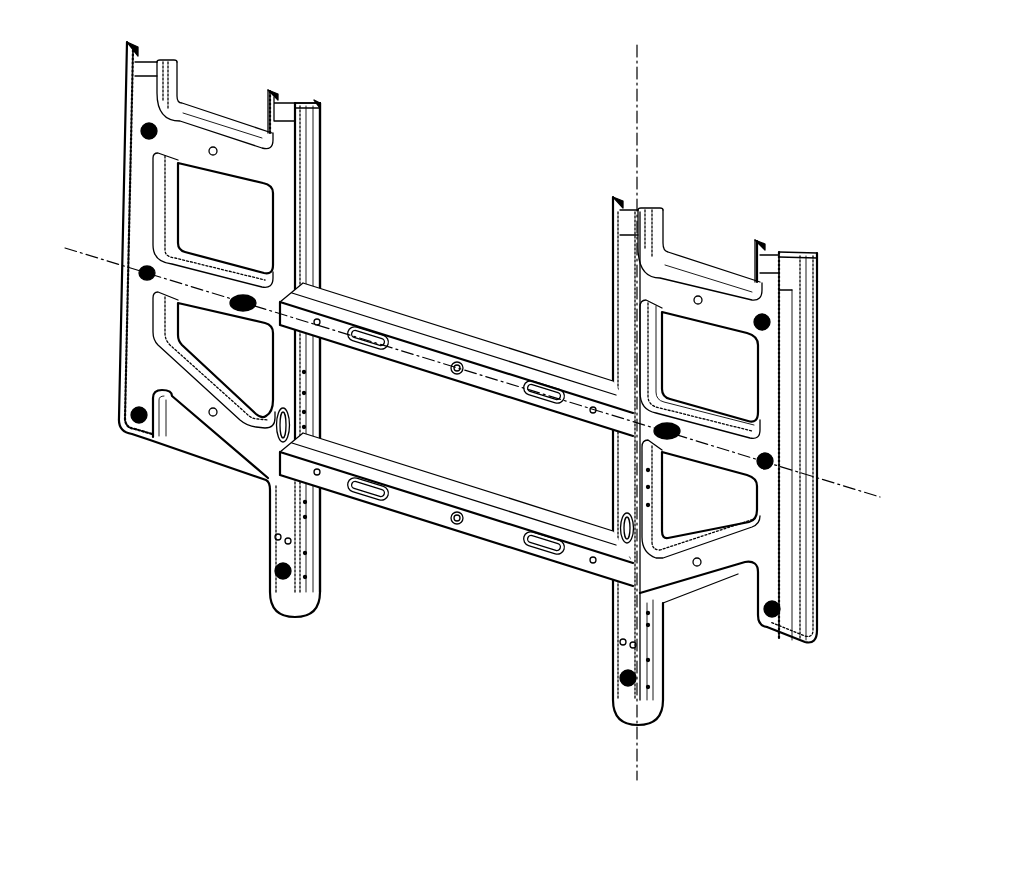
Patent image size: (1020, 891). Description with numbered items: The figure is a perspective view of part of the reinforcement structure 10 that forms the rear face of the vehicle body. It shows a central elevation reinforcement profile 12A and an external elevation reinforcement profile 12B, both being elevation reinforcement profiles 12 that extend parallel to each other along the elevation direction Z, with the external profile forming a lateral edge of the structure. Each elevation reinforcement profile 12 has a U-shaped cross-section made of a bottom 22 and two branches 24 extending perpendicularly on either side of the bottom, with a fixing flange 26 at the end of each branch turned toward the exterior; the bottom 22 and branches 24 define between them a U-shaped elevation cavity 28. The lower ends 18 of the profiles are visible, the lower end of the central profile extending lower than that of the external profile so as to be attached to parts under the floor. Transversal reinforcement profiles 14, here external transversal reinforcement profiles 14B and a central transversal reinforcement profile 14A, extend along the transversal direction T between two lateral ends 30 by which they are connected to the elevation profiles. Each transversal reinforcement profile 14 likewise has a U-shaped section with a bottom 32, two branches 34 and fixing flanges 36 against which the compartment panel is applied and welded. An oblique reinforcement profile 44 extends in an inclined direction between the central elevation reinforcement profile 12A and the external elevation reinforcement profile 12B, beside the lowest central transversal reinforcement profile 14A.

The reinforcement structure 10 is at (113, 511).
The elevation reinforcement profile 12 is at (466, 393).
The central elevation reinforcement profile 12A is at (283, 388).
The external elevation reinforcement profile 12B is at (140, 237).
The transversal reinforcement profile 14 is at (456, 433).
The central transversal reinforcement profile 14A is at (407, 350).
The external transversal reinforcement profile 14B is at (212, 130).
The lower end 18 is at (128, 412).
The bottom 22 is at (267, 170).
The branch 24 is at (320, 127).
The fixing flange 26 is at (318, 236).
The U-shaped elevation cavity 28 is at (290, 102).
The lateral end 30 is at (280, 446).
The bottom 32 is at (456, 528).
The branch 34 is at (520, 505).
The fixing flange 36 is at (577, 553).
The oblique reinforcement profile 44 is at (202, 400).
The elevation direction Z is at (645, 95).
The transversal direction T is at (880, 497).